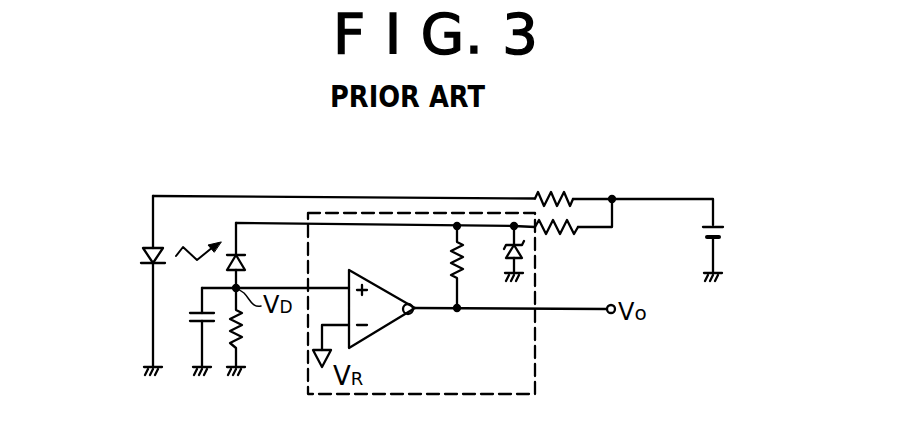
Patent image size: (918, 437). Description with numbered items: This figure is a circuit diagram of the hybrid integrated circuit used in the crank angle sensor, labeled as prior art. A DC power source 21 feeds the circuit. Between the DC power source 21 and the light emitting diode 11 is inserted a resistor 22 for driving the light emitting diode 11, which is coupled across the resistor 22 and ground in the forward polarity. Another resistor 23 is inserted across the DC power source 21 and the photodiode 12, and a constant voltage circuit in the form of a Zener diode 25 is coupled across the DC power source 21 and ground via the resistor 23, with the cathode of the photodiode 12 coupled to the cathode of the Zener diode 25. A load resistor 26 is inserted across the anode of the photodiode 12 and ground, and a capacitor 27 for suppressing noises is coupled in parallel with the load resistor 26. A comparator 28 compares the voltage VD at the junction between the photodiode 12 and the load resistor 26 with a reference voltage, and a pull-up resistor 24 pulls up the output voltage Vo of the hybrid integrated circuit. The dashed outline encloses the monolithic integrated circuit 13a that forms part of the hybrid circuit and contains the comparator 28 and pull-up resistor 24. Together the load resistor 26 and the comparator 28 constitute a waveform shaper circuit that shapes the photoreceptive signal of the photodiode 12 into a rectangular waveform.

The light emitting diode 11 is at (141, 257).
The photodiode 12 is at (246, 257).
The monolithic integrated circuit 13a is at (536, 345).
The DC power source 21 is at (722, 236).
The resistor 22 is at (557, 191).
The resistor 23 is at (571, 232).
The pull-up resistor 24 is at (453, 260).
The Zener diode 25 is at (521, 252).
The load resistor 26 is at (243, 332).
The capacitor 27 is at (190, 316).
The comparator 28 is at (378, 283).